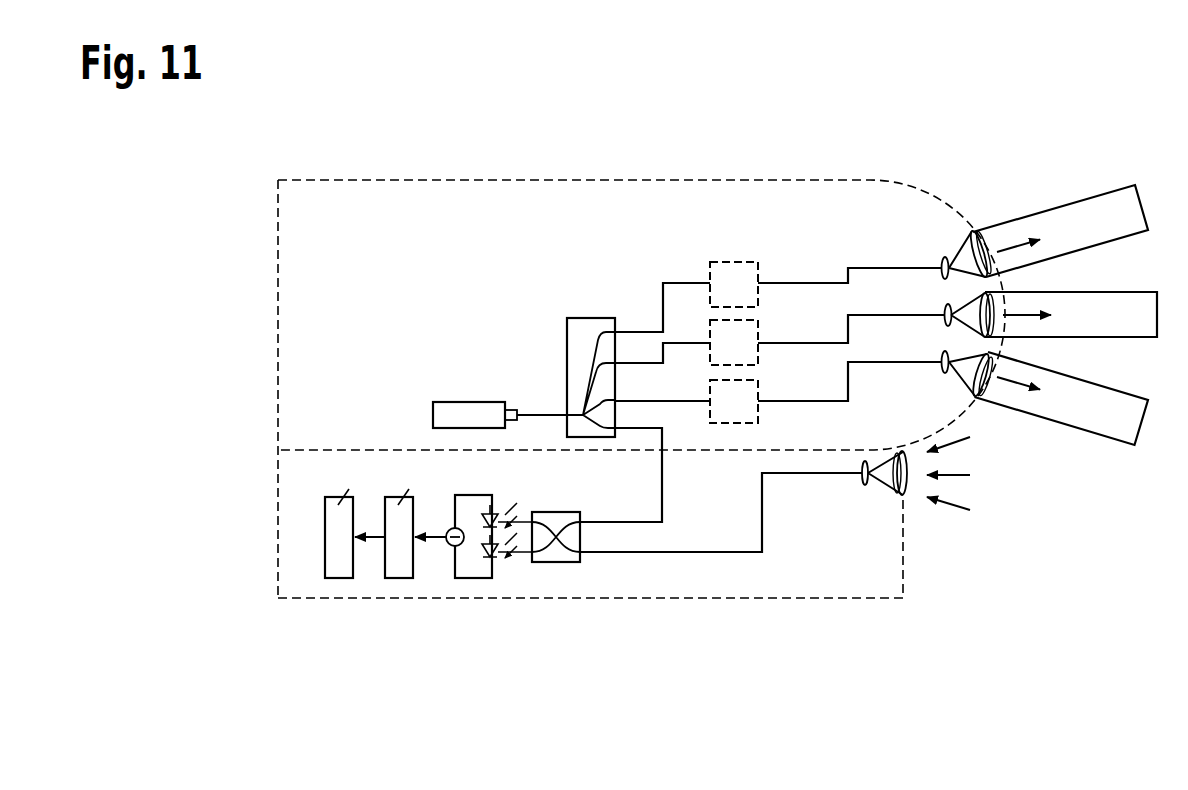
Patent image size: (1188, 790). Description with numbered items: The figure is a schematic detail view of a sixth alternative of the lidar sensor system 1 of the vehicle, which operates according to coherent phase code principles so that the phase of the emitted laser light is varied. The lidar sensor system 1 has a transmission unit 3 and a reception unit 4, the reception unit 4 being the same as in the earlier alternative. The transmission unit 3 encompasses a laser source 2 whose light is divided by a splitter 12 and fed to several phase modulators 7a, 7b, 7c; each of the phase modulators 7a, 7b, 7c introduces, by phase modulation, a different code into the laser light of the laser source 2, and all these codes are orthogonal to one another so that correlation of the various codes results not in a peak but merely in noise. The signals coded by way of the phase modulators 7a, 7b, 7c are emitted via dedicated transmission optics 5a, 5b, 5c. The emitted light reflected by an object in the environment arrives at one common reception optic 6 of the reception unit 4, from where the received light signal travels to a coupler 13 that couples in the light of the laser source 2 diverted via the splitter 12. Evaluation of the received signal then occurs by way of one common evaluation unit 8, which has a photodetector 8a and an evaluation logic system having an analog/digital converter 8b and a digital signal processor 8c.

The lidar sensor system 1 is at (210, 247).
The laser source 2 is at (465, 402).
The transmission unit 3 is at (684, 180).
The reception unit 4 is at (785, 600).
The transmission optic 5a is at (980, 243).
The transmission optic 5b is at (990, 305).
The transmission optic 5c is at (981, 377).
The reception optic 6 is at (905, 490).
The phase modulator 7a is at (760, 383).
The phase modulator 7b is at (760, 323).
The phase modulator 7c is at (760, 265).
The evaluation unit 8 is at (427, 602).
The photodetector 8a is at (473, 578).
The analog/digital converter 8b is at (399, 578).
The digital signal processor 8c is at (345, 574).
The splitter 12 is at (590, 318).
The coupler 13 is at (558, 562).